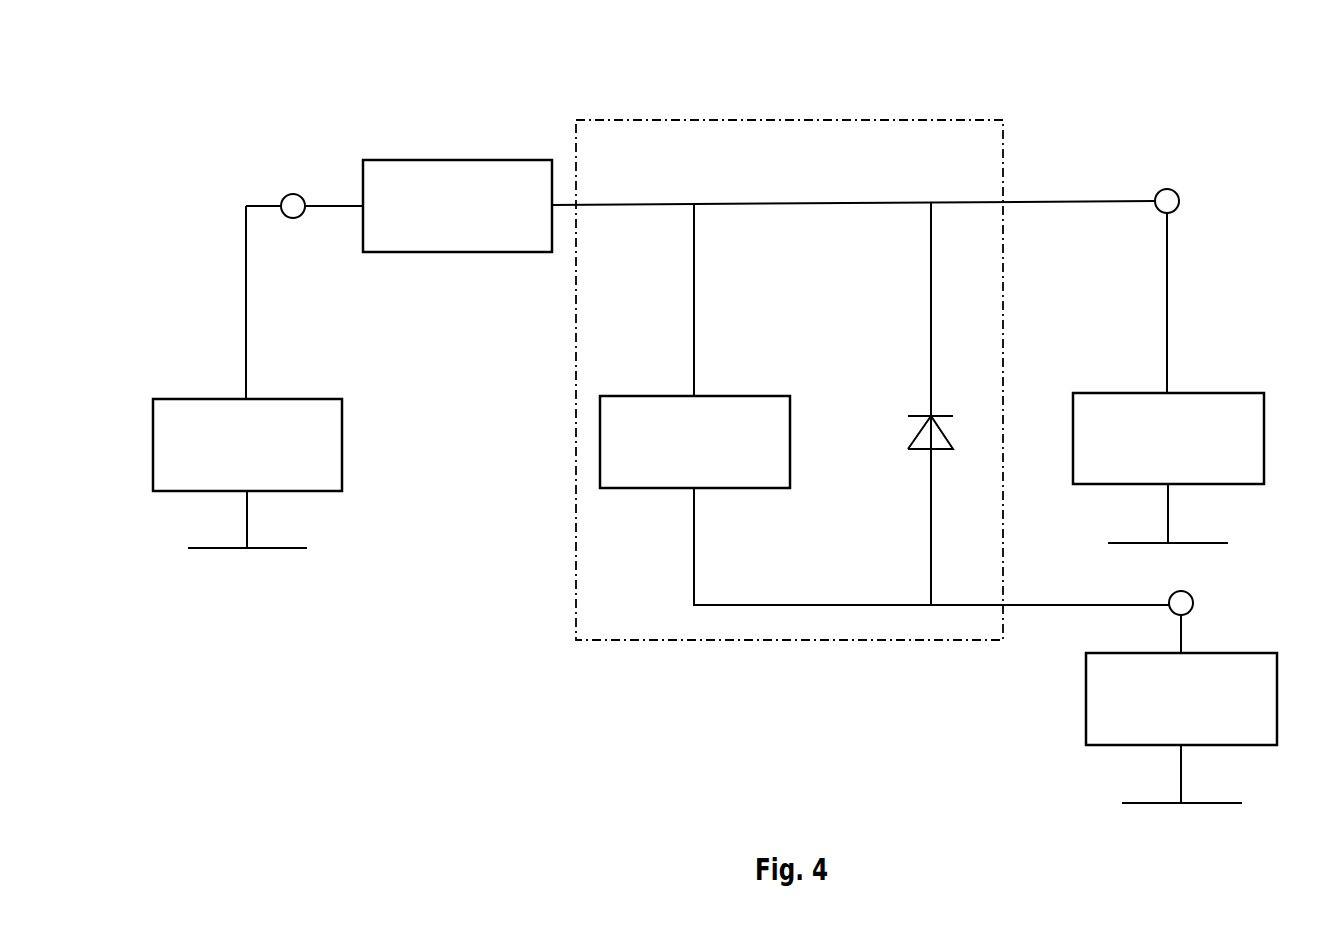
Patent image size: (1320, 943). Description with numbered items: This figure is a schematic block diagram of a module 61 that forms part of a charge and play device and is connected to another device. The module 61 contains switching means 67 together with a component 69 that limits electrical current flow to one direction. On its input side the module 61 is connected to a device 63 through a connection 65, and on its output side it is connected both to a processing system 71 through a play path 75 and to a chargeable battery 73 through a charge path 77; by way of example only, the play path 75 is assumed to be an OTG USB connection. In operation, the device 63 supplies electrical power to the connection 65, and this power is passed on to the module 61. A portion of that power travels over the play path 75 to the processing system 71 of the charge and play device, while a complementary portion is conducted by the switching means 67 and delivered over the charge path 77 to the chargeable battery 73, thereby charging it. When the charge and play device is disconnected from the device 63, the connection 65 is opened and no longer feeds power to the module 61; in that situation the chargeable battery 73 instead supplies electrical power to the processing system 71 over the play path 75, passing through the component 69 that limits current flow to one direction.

The module 61 is at (835, 120).
The device 63 is at (317, 398).
The connection 65 is at (468, 159).
The switching means 67 is at (753, 395).
The component limiting electrical current flow to one direction 69 is at (943, 416).
The processing system 71 is at (1227, 391).
The chargeable battery 73 is at (1252, 652).
The play path 75 is at (1118, 200).
The charge path 77 is at (1050, 603).